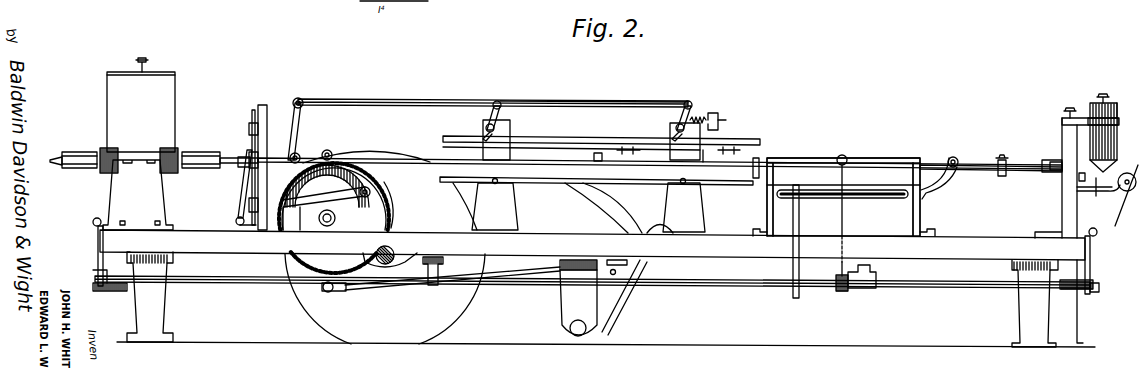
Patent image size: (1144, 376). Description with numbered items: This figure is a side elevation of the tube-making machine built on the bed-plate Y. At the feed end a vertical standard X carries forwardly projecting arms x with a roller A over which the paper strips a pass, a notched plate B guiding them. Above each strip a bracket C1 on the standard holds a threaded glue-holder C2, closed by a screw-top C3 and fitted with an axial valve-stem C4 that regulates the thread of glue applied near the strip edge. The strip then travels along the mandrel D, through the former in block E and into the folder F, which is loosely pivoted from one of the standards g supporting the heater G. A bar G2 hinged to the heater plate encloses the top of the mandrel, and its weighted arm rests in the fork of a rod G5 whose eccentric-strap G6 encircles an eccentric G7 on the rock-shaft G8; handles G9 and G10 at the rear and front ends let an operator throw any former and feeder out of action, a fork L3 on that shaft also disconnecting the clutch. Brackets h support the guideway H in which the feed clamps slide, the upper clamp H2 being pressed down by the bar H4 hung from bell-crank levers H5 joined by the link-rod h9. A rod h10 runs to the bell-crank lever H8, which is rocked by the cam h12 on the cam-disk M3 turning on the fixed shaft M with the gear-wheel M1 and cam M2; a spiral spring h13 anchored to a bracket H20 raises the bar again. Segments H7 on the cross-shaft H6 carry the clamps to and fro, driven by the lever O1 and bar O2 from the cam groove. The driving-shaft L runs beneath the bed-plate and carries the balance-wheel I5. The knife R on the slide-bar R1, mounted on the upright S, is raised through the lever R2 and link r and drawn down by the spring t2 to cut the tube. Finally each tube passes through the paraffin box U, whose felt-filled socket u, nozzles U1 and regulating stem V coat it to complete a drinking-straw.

The bed-plate Y is at (216, 250).
The rock-shaft G8 is at (693, 296).
The receptacle or box U is at (141, 112).
The stem V is at (150, 65).
The socket u is at (113, 176).
The nozzles U1 is at (86, 152).
The upright S is at (267, 140).
The vertical slide-bar R1 is at (252, 117).
The knife R is at (250, 140).
The link r is at (244, 195).
The spring t2 is at (270, 230).
The lever O1 is at (291, 163).
The bell-crank lever H8 is at (299, 121).
The rod h10 is at (493, 97).
The link-rod h9 is at (594, 94).
The gear-wheel M1 is at (339, 150).
The lever R2 is at (350, 158).
The fixed shaft M is at (337, 232).
The cam M2 is at (312, 230).
The cam-disk M3 is at (372, 193).
The cam h12 is at (389, 222).
The driving-shaft L is at (394, 253).
The fork L3 is at (388, 270).
The balance-wheel I5 is at (455, 305).
The bar O2 is at (336, 290).
The bar H4 is at (598, 140).
The bell-crank levers H5 is at (503, 104).
The spiral spring h13 is at (705, 115).
The bracket H20 is at (718, 112).
The upper clamp H2 is at (706, 158).
The guideway H is at (596, 176).
The brackets h is at (588, 206).
The segment H7 is at (604, 205).
The cross-shaft H6 is at (588, 330).
The heater G is at (844, 197).
The bar G2 is at (886, 159).
The standards g is at (843, 199).
The rod G5 is at (846, 212).
The eccentric-strap G6 is at (848, 292).
The eccentric G7 is at (800, 292).
The folder F is at (950, 162).
The block E is at (996, 192).
The mandrel D is at (1008, 165).
The standard X is at (1048, 205).
The bracket C1 is at (1083, 110).
The glue-holder C2 is at (1110, 137).
The valve-stem C4 is at (1102, 90).
The screw-top C3 is at (1117, 107).
The roller A is at (1128, 173).
The plate B is at (1097, 189).
The arms x is at (1091, 192).
The paper strips a is at (1126, 195).
The handle G10 is at (1096, 236).
The handle G9 is at (96, 228).